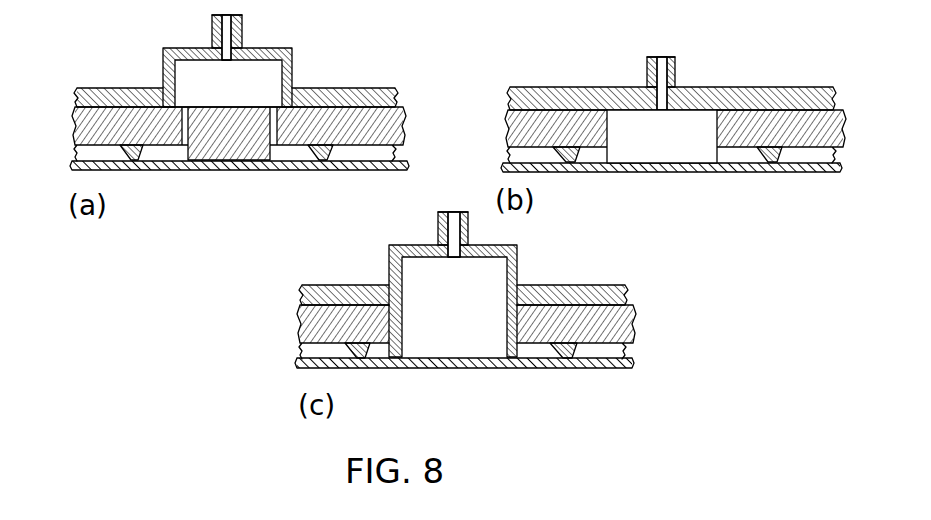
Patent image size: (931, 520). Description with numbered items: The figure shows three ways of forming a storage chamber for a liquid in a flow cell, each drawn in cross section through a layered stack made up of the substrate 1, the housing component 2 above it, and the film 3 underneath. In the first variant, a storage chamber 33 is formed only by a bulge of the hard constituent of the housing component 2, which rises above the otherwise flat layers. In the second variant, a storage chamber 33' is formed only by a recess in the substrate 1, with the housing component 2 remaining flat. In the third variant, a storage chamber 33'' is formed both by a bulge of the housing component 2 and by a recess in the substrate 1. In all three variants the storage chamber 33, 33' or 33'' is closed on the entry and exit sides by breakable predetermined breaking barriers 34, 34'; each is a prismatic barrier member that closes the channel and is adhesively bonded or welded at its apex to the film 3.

The substrate 1 is at (90, 125).
The housing component 2 is at (371, 98).
The film 3 is at (723, 172).
The storage chamber 33 is at (216, 57).
The storage chamber 33' is at (688, 110).
The storage chamber 33'' is at (454, 319).
The predetermined breaking barrier 34 is at (226, 179).
The predetermined breaking barrier 34' is at (694, 180).